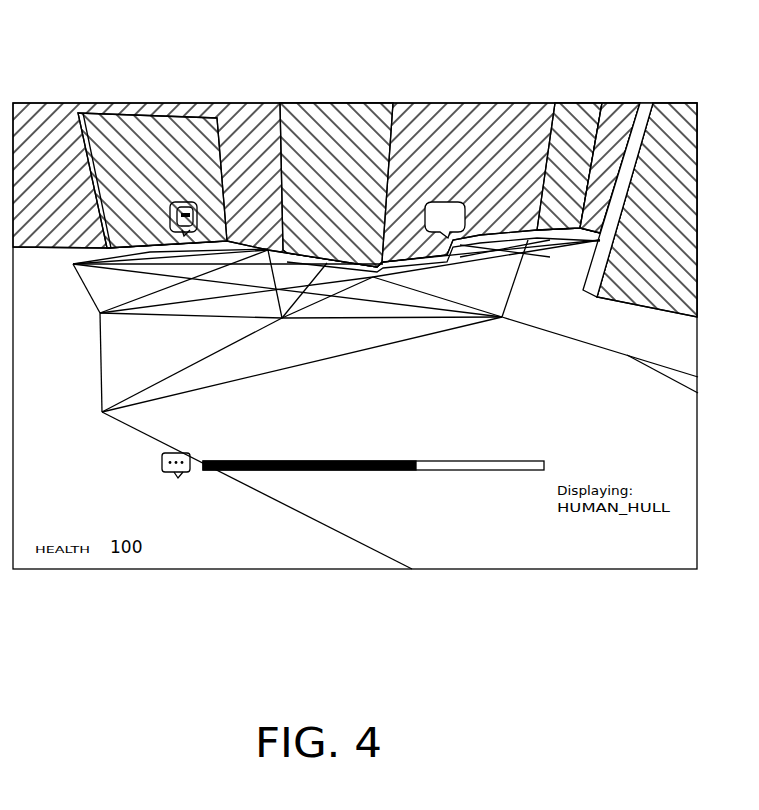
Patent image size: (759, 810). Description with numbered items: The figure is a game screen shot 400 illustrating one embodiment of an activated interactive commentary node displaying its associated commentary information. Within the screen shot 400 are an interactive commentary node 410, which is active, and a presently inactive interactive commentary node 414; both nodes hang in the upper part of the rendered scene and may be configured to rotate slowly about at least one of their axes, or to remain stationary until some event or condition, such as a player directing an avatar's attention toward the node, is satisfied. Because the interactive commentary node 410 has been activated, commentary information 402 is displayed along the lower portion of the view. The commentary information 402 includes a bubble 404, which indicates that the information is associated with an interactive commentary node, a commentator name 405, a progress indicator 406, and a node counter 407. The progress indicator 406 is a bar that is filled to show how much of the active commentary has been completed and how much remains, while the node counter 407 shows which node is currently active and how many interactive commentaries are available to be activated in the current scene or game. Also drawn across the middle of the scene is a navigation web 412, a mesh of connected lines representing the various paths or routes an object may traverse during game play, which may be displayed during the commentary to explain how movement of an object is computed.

The screen shot 400 is at (650, 45).
The commentary information 402 is at (355, 569).
The bubble 404 is at (177, 478).
The commentator name 405 is at (226, 458).
The progress indicator 406 is at (293, 472).
The node counter 407 is at (533, 537).
The interactive commentary node 410 is at (152, 57).
The navigation web 412 is at (277, 67).
The inactive interactive commentary node 414 is at (440, 56).